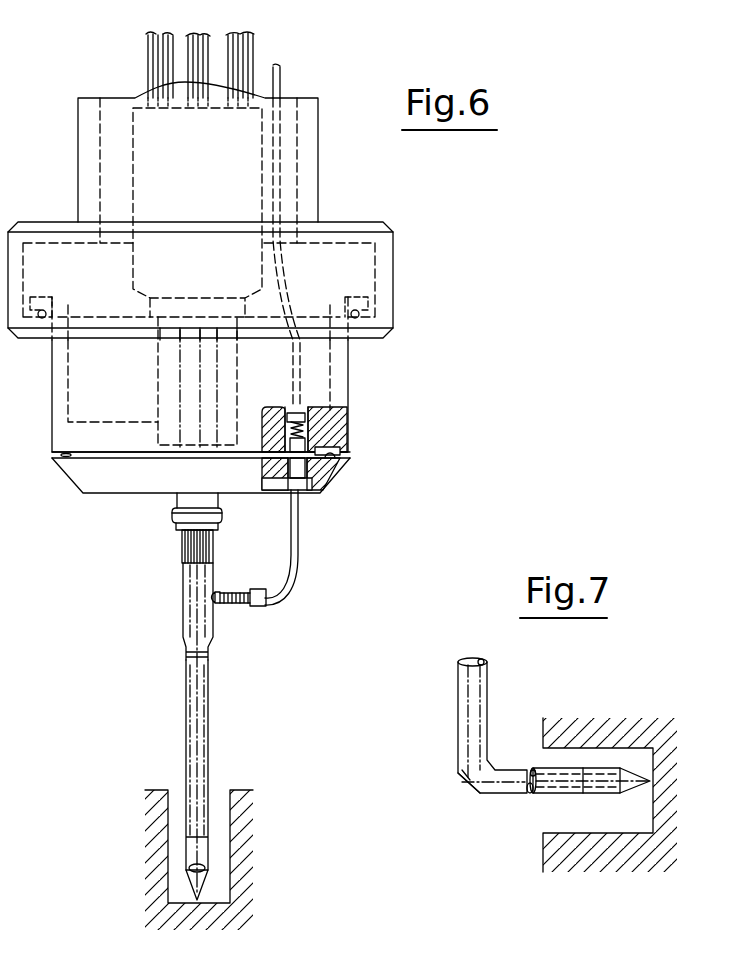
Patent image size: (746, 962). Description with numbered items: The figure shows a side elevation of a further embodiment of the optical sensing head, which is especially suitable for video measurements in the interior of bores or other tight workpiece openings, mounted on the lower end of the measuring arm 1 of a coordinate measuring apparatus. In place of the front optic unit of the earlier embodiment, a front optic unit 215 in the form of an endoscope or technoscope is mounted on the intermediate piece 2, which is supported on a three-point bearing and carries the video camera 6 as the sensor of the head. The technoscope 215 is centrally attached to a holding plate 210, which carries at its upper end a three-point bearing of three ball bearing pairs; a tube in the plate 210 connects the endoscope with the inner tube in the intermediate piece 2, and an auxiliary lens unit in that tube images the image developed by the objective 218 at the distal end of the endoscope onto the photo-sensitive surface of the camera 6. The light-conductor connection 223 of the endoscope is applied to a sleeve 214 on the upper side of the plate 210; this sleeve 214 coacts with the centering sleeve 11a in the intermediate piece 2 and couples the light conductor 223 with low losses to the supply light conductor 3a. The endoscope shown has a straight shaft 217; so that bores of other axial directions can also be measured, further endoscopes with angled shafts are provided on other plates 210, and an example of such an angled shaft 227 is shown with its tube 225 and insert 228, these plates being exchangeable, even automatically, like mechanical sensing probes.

In FIG. 6, the measuring arm 1 is at (393, 287).
In FIG. 6, the intermediate piece 2 is at (337, 382).
In FIG. 6, the supply light conductor 3a is at (280, 78).
In FIG. 6, the video camera 6 is at (150, 160).
In FIG. 6, the centering sleeve 11a is at (348, 432).
In FIG. 6, the sleeve 214 is at (343, 463).
In FIG. 6, the holding plate 210 is at (246, 694).
In FIG. 6, the light-conductor connection 223 is at (300, 558).
In FIG. 6, the front optic unit 215 is at (180, 735).
In FIG. 6, the straight shaft 217 is at (202, 772).
In FIG. 6, the objective 218 is at (195, 866).
In FIG. 7, the angled probe tube 225 is at (497, 710).
In FIG. 7, the angled shaft 227 is at (462, 758).
In FIG. 7, the probe insert 228 is at (603, 785).